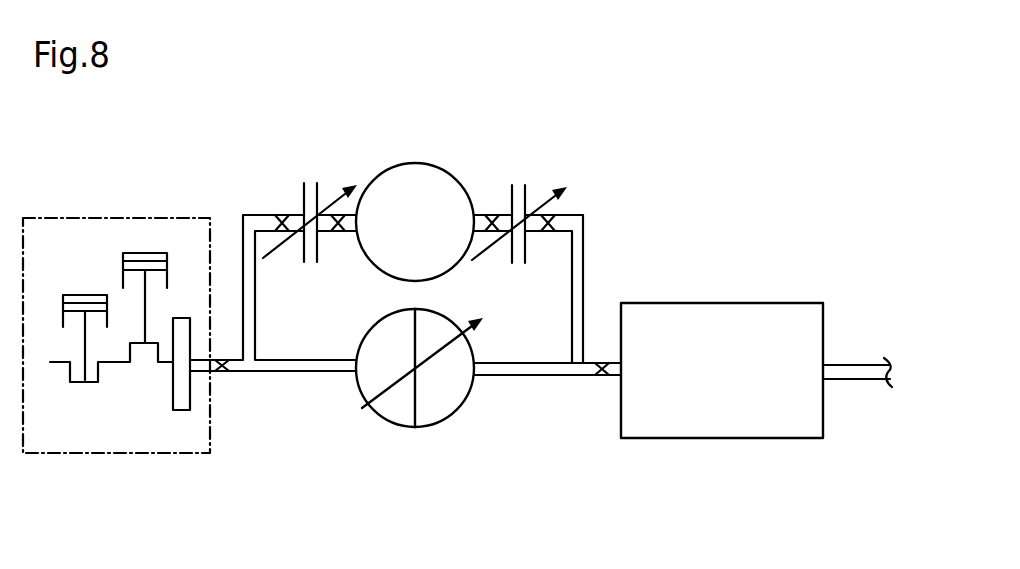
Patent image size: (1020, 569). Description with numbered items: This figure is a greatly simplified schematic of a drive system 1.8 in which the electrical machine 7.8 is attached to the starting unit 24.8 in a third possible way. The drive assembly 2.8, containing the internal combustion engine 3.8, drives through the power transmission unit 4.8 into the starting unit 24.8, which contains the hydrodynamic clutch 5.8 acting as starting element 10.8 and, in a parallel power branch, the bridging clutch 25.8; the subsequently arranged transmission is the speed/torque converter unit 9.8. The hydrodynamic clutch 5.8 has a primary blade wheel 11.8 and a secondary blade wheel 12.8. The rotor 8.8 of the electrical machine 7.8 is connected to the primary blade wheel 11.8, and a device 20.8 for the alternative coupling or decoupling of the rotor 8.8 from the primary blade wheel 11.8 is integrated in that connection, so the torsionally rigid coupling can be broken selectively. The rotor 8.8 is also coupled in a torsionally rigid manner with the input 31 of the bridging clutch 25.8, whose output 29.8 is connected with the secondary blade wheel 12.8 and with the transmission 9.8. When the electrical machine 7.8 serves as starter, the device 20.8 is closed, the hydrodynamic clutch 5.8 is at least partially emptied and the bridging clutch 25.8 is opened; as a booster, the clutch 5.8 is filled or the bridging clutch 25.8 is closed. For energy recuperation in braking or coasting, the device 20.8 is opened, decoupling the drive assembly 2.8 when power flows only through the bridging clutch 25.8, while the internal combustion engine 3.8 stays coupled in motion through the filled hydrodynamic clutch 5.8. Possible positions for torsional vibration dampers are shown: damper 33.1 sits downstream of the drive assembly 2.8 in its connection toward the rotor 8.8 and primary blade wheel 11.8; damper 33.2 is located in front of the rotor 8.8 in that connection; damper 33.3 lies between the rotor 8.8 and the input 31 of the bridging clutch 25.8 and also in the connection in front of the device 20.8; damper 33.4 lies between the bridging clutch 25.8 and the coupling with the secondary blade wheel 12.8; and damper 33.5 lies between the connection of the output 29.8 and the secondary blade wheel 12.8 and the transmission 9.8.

The drive system 1.8 is at (446, 97).
The drive assembly 2.8 is at (116, 287).
The internal combustion engine 3.8 is at (93, 218).
The power transmission unit 4.8 is at (445, 412).
The hydrodynamic clutch 5.8 is at (445, 412).
The starting element 10.8 is at (445, 412).
The electrical machine 7.8 is at (415, 193).
The rotor of the electrical machine 8.8 is at (412, 177).
The speed/torque converter unit 9.8 is at (735, 380).
The primary blade wheel 11.8 is at (385, 403).
The secondary blade wheel 12.8 is at (445, 393).
The device for the alternative coupling or decoupling of the rotor from the primary 20.8 is at (291, 192).
The starting unit 24.8 is at (490, 342).
The bridging clutch 25.8 is at (524, 182).
The output of the bridging clutch 29.8 is at (592, 216).
The input of the bridging clutch 31 is at (492, 212).
The torsional vibration damper 33.1 is at (223, 380).
The torsional vibration damper 33.2 is at (338, 212).
The torsional vibration damper 33.3 is at (282, 232).
The torsional vibration damper 33.4 is at (552, 214).
The torsional vibration damper 33.5 is at (600, 383).